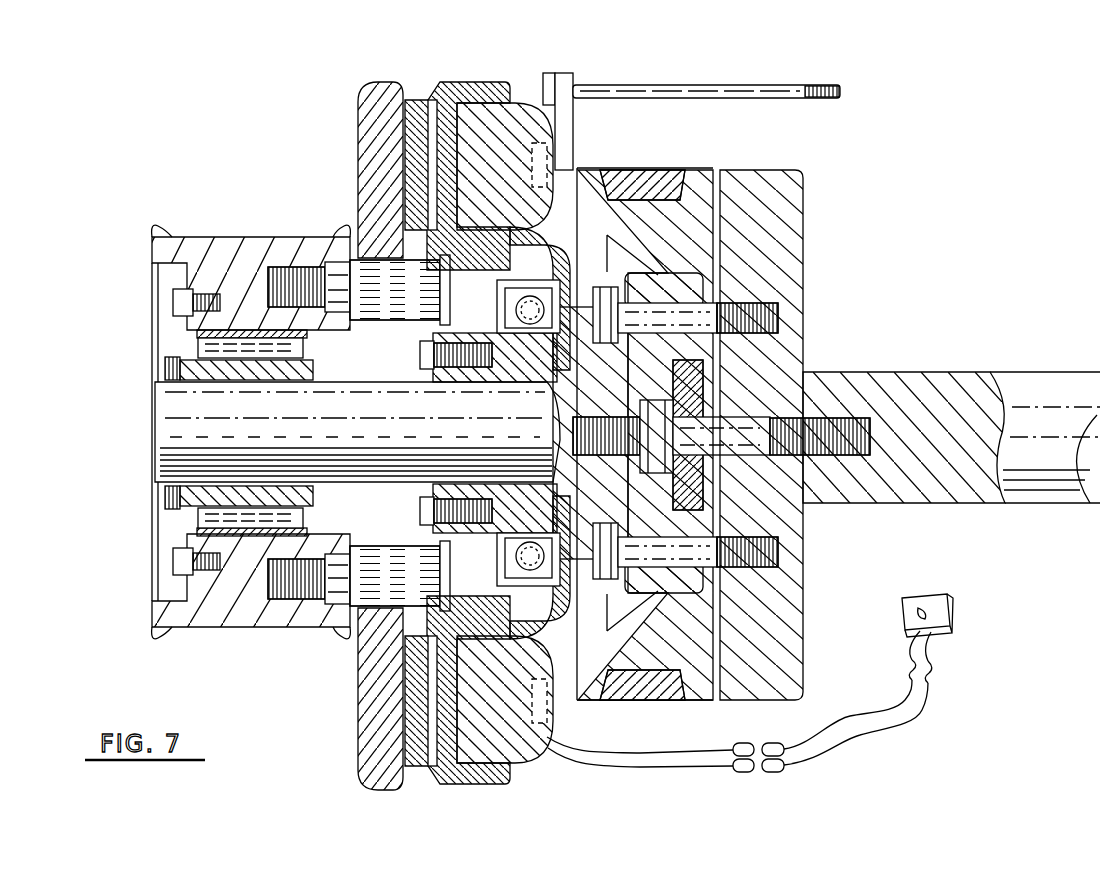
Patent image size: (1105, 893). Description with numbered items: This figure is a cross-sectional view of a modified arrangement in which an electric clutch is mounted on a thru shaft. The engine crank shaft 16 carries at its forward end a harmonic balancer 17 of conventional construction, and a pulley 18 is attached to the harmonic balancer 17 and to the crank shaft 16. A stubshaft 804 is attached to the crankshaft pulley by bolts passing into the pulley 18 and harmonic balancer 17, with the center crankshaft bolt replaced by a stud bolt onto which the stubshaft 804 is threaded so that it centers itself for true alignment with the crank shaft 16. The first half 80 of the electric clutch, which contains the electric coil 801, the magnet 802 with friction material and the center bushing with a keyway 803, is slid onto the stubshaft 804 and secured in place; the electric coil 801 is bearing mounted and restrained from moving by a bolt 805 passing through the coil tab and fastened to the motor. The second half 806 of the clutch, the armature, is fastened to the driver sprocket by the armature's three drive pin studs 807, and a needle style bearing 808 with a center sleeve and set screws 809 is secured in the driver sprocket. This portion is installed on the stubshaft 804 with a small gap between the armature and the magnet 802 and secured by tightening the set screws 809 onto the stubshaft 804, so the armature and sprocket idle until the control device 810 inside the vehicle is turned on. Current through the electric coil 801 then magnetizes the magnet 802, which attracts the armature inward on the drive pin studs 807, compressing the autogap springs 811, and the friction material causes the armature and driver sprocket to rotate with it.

The crank shaft 16 is at (1035, 388).
The harmonic balancer 17 is at (773, 174).
The pulley 18 is at (707, 168).
The first half of the electric clutch 80 is at (582, 160).
The electric coil 801 is at (524, 137).
The magnet 802 is at (417, 133).
The center bushing with a keyway 803 is at (497, 373).
The stubshaft 804 is at (178, 413).
The bolt 805 is at (721, 90).
The second half of the electric clutch 806 is at (380, 163).
The drive pin studs 807 is at (292, 277).
The needle style bearing 808 is at (250, 348).
The set screws 809 is at (168, 358).
The control device 810 is at (957, 606).
The autogap springs 811 is at (417, 348).